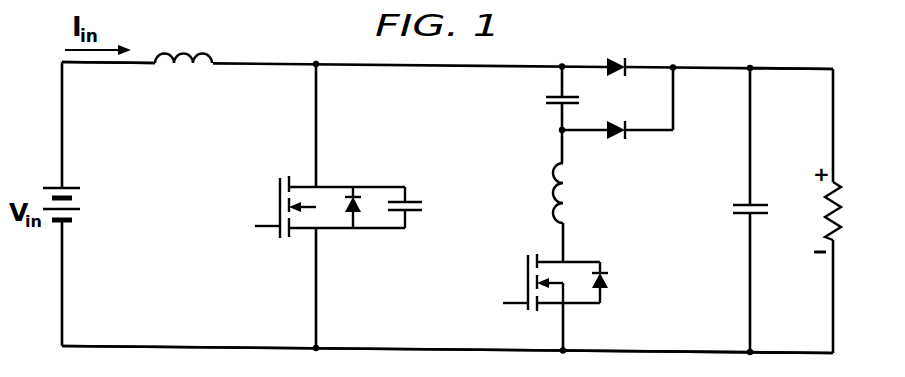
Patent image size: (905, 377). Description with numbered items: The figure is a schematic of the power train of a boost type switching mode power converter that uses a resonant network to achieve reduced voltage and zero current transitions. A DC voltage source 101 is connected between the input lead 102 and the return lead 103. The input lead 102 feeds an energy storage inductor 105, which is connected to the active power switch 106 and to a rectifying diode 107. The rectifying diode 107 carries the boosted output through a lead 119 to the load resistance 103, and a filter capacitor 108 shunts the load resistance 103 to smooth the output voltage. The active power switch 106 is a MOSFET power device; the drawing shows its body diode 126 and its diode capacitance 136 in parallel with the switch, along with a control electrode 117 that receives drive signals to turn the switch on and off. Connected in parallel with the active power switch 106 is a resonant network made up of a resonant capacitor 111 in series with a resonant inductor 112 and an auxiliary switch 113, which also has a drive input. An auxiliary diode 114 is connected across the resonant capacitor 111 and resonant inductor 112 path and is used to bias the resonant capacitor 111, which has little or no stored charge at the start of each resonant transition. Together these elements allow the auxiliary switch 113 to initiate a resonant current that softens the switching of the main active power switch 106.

The DC voltage source 101 is at (79, 207).
The input lead 102 is at (127, 64).
The return lead / load resistance 103 is at (119, 346).
The energy storage inductor 105 is at (183, 40).
The active power switch 106 is at (342, 194).
The rectifying diode 107 is at (617, 58).
The filter capacitor 108 is at (731, 215).
The resonant capacitor 111 is at (546, 100).
The resonant inductor 112 is at (538, 193).
The auxiliary switch 113 is at (526, 278).
The auxiliary diode 114 is at (614, 114).
The control electrode 117 is at (268, 228).
The lead 119 is at (790, 69).
The body diode 126 is at (355, 214).
The diode capacitance 136 is at (424, 207).